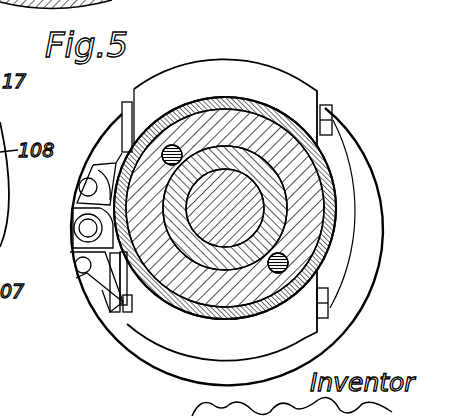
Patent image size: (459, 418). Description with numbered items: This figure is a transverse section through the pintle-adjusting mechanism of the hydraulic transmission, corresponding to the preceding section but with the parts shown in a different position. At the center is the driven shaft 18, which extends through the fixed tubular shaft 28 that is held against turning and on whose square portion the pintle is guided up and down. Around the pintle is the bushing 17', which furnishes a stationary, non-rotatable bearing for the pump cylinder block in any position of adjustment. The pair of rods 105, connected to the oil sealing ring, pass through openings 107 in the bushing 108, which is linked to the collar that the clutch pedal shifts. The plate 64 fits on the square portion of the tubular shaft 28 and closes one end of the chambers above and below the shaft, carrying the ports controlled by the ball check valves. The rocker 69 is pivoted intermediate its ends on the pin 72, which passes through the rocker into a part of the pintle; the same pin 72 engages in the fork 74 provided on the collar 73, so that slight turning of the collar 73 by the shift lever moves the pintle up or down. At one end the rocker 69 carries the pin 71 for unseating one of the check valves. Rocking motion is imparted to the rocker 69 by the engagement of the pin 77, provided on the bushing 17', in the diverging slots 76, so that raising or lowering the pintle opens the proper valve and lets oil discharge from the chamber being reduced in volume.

The plate 64 is at (300, 92).
The collar 73 is at (222, 102).
The bushing 108 is at (297, 173).
The tubular shaft 28 is at (225, 245).
The openings 107 is at (233, 261).
The rods 105 is at (167, 145).
The bushing 17' is at (351, 118).
The shaft 18 is at (325, 244).
The diverging slots 76 is at (92, 168).
The pin 77 is at (79, 188).
The pin 72 is at (83, 228).
The fork 74 is at (77, 257).
The rocker 69 is at (97, 288).
The pin 71 is at (120, 314).